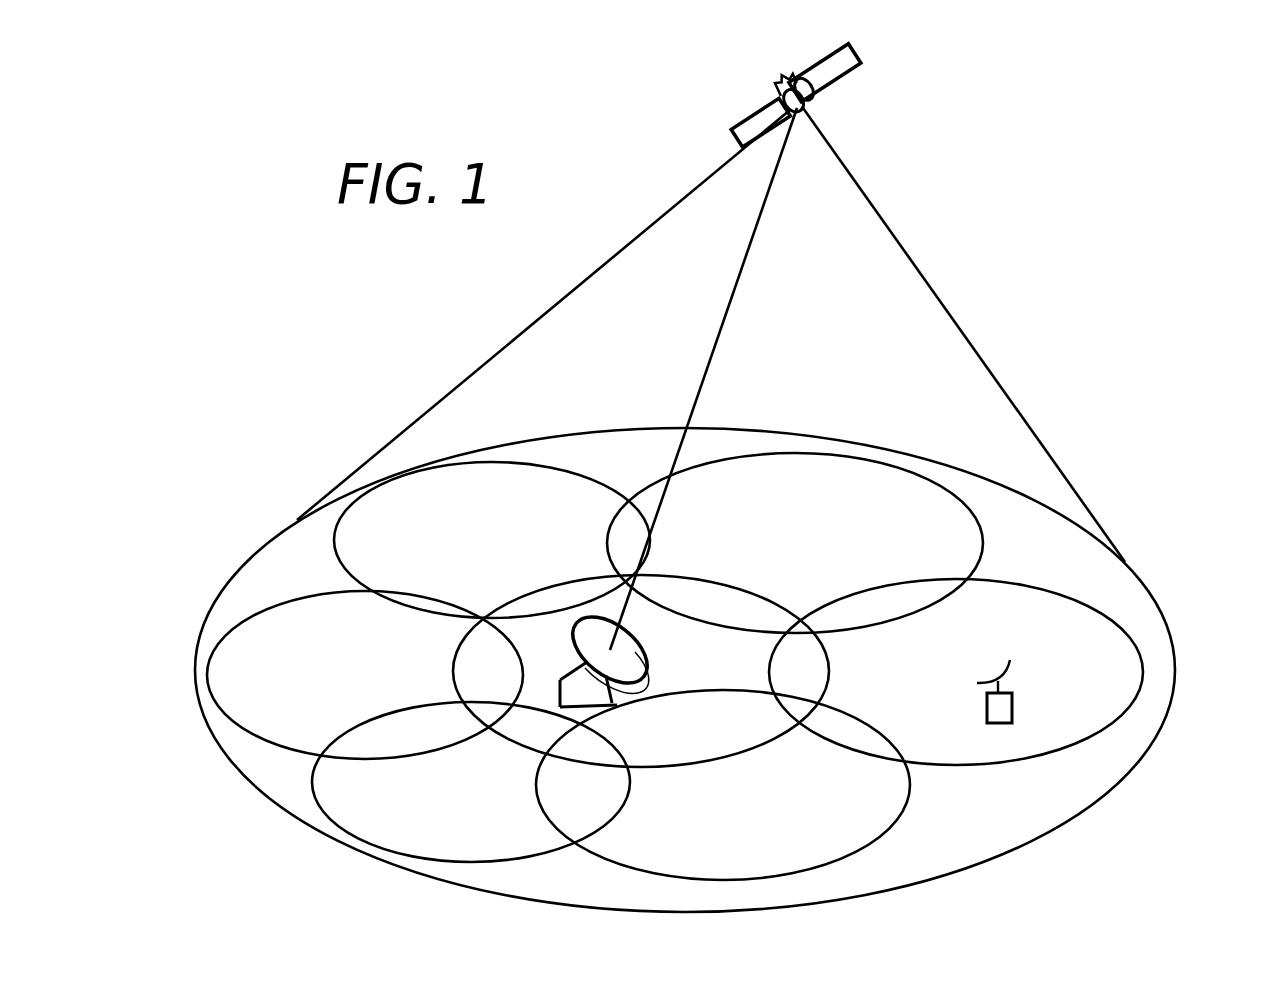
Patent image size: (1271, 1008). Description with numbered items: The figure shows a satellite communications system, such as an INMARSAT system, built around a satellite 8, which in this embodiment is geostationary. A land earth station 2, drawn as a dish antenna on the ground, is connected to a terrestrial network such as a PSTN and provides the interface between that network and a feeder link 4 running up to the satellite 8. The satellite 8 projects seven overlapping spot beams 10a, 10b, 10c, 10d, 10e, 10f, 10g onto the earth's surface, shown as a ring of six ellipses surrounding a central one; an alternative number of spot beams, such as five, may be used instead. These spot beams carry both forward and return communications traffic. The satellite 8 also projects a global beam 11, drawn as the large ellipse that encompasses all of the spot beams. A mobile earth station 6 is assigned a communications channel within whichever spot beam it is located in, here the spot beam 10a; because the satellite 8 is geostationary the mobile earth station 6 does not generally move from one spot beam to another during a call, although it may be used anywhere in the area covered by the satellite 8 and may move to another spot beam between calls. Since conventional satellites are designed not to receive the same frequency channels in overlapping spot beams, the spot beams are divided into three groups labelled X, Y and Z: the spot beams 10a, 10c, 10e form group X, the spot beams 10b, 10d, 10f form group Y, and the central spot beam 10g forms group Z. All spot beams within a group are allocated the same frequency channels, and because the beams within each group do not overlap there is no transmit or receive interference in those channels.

The land earth station 2 is at (555, 678).
The feeder link 4 is at (710, 365).
The mobile earth station 6 is at (1012, 703).
The satellite 8 is at (772, 76).
The spot beam 10a is at (956, 672).
The spot beam 10b is at (795, 543).
The spot beam 10c is at (492, 540).
The spot beam 10d is at (365, 675).
The spot beam 10e is at (471, 782).
The spot beam 10f is at (723, 785).
The spot beam 10g is at (641, 671).
The global beam 11 is at (1175, 668).